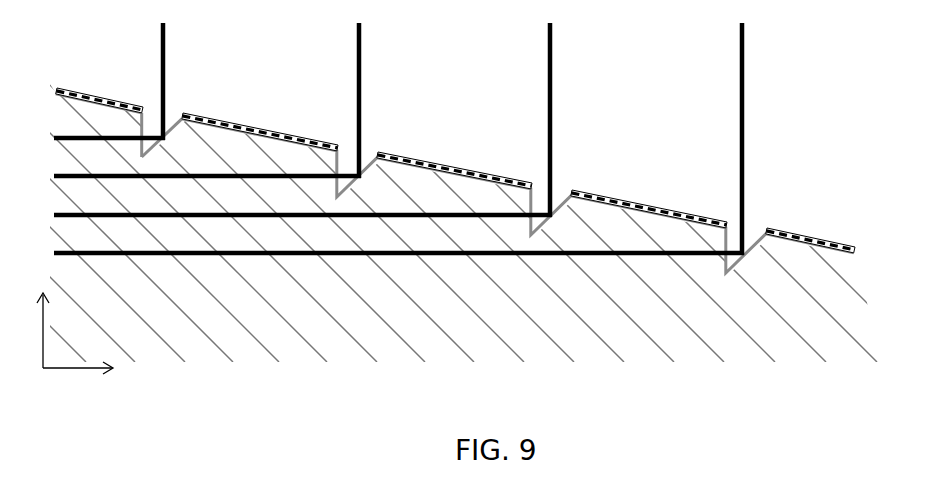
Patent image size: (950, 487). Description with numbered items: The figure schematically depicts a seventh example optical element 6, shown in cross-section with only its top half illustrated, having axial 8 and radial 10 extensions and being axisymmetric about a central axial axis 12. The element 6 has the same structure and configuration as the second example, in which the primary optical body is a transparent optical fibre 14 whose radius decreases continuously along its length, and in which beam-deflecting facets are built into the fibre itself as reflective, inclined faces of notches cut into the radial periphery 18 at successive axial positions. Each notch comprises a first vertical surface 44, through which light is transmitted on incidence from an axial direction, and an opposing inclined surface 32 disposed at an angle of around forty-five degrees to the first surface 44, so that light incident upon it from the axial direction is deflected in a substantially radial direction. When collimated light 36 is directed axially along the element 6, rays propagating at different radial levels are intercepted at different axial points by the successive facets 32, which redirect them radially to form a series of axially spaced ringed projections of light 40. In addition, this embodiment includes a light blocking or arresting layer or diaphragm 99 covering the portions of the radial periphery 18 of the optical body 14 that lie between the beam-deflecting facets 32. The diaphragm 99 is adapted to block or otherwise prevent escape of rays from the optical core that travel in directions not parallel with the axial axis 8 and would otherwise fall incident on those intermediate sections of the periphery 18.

The optical element 6 is at (822, 146).
The axial extension 8 is at (78, 378).
The radial extension 10 is at (30, 330).
The central axial axis 12 is at (877, 362).
The optical fibre 14 is at (687, 343).
The radial periphery 18 is at (872, 254).
The inclined surface 32 is at (175, 111).
The collimated light 36 is at (90, 140).
The ringed projections of light 40 is at (166, 50).
The first vertical surface 44 is at (154, 121).
The light-arresting diaphragm 99 is at (435, 157).